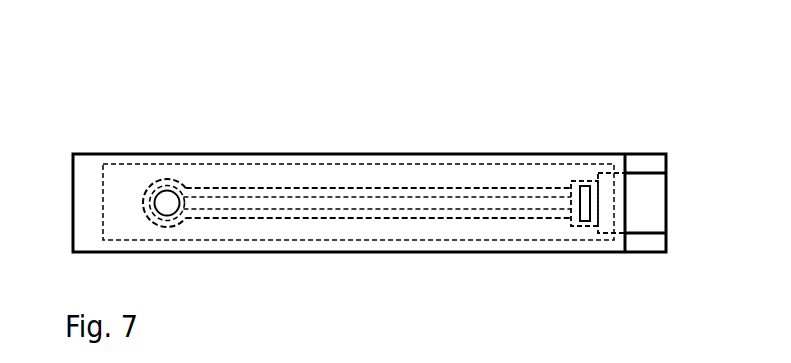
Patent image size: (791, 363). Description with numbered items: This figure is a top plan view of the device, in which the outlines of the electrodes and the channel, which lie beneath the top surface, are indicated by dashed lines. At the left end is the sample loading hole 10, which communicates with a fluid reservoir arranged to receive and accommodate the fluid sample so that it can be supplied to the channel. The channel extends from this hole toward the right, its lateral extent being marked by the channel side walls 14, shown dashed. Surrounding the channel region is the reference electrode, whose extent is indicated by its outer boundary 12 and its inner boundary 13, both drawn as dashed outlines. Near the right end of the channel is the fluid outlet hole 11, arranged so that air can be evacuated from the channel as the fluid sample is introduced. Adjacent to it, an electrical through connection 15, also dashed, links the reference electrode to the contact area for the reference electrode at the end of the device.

The sample loading hole 10 is at (166, 200).
The fluid outlet hole 11 is at (585, 187).
The outer boundary of the reference electrode 12 is at (243, 163).
The inner boundary of the reference electrode 13 is at (417, 197).
The channel side walls 14 is at (317, 188).
The electrical through connection 15 is at (610, 176).